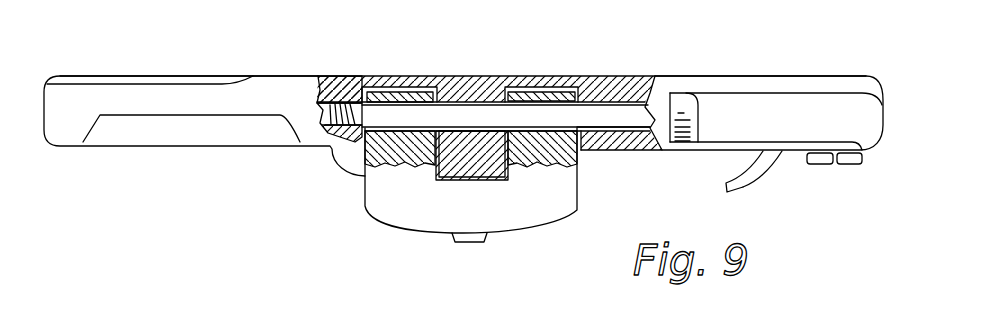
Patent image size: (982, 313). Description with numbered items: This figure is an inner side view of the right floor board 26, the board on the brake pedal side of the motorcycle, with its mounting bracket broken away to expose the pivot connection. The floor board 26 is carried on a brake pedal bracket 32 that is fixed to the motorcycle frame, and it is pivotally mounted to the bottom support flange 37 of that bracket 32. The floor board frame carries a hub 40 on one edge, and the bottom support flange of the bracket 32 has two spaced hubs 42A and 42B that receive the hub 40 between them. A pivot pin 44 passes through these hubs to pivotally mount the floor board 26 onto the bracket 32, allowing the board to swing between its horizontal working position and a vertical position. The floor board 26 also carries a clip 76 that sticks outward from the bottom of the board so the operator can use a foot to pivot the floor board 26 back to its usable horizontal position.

The right floor board 26 is at (746, 72).
The brake pedal bracket 32 is at (377, 192).
The bottom support flange 37 is at (850, 122).
The hub 40 is at (490, 168).
The first spaced hub 42A is at (528, 82).
The second spaced hub 42B is at (382, 97).
The pivot pin 44 is at (469, 118).
The clip 76 is at (743, 187).